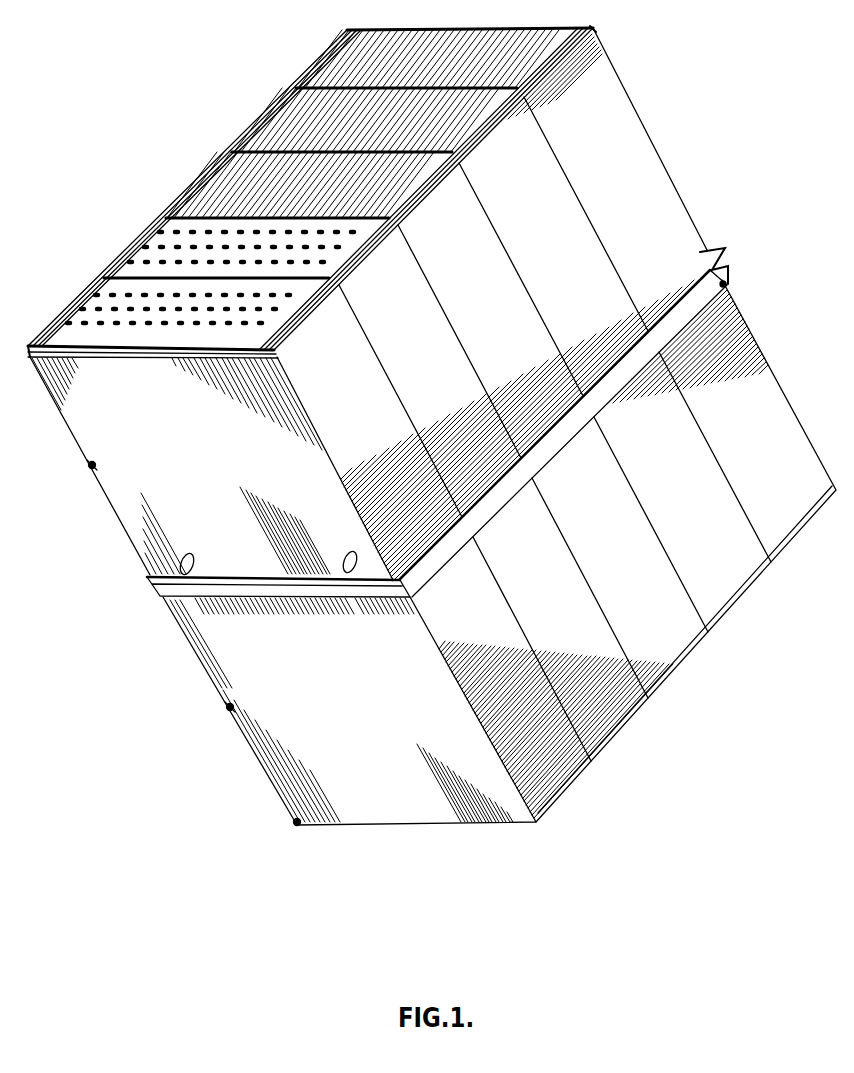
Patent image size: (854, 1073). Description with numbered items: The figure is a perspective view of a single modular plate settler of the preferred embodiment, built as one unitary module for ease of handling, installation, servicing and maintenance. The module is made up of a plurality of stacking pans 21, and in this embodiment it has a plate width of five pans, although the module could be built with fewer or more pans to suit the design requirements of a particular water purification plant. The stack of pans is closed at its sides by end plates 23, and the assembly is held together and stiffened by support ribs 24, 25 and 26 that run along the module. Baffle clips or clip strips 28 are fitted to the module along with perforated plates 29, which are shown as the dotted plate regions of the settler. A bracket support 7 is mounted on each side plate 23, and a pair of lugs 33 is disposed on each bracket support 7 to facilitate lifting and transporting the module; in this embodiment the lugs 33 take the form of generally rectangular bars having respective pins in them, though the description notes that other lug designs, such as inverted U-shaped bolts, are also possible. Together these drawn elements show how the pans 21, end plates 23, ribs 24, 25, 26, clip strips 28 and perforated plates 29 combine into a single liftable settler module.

The bracket support 7 is at (438, 412).
The stacking pans 21 is at (335, 139).
The end plates 23 is at (432, 426).
The support rib 24 is at (419, 513).
The support rib 25 is at (425, 579).
The support rib 26 is at (438, 467).
The baffle clips or clip strips 28 is at (370, 216).
The perforated plates 29 is at (206, 268).
The lugs 33 is at (238, 613).